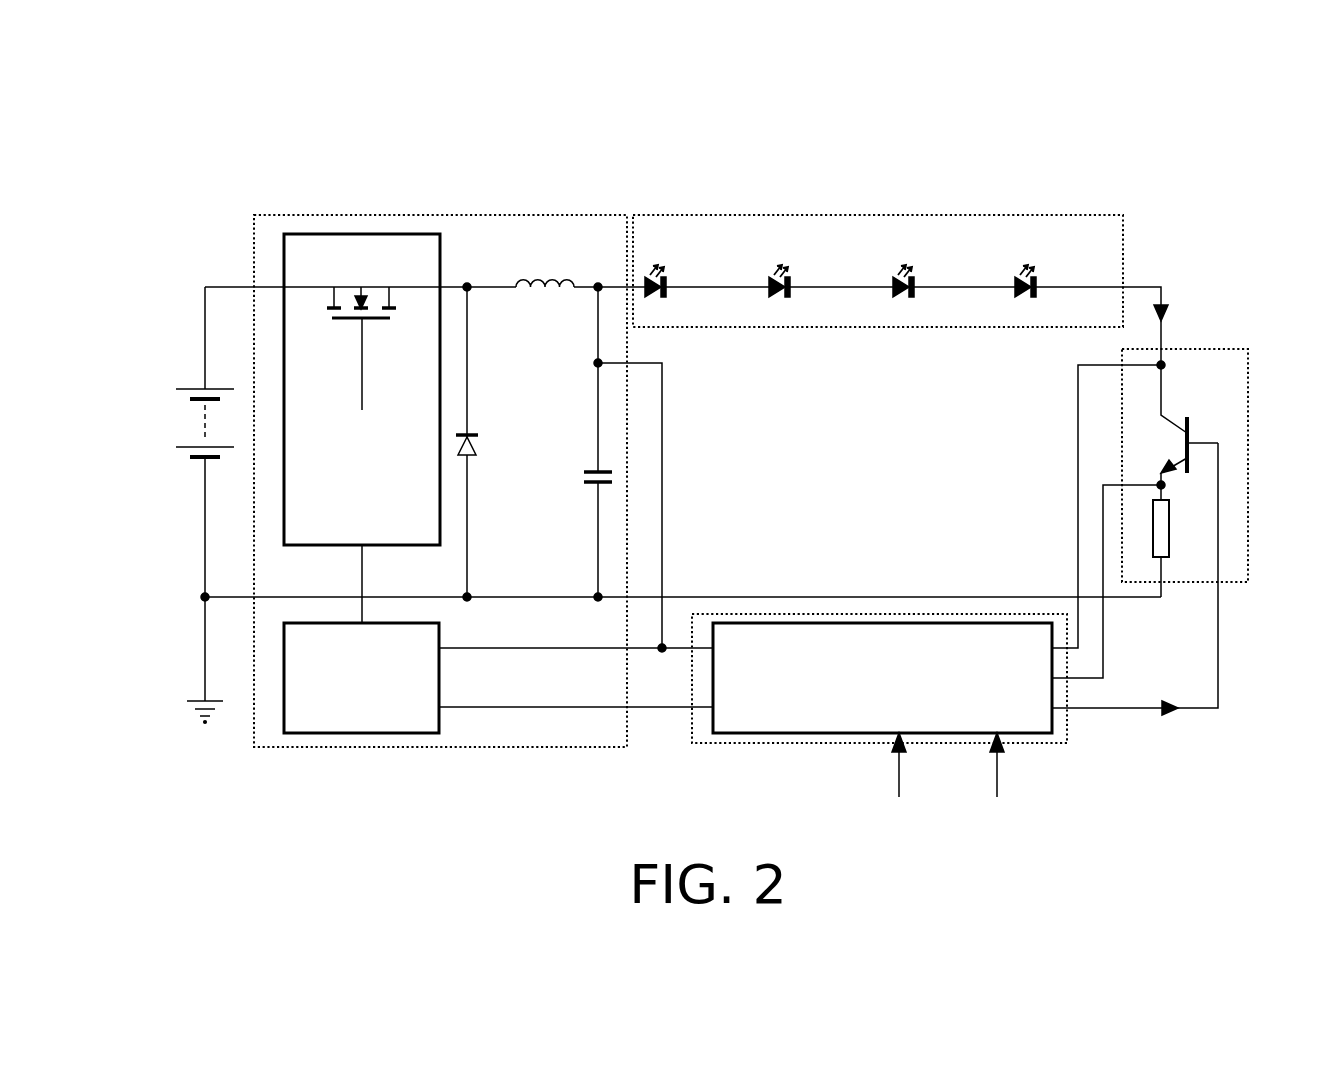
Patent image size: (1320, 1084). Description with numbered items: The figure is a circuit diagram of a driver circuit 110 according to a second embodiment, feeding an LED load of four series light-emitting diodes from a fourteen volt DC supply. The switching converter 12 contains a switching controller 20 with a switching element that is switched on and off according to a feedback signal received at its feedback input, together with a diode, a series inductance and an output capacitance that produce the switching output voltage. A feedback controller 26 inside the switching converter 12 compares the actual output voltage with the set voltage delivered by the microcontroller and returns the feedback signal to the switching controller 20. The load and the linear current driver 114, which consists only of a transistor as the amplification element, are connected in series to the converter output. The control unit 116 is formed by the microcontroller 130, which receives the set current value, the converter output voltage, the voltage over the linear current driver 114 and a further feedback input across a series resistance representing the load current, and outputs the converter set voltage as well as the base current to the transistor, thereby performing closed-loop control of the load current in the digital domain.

The circuit 110 is at (1206, 142).
The switching converter 12 is at (465, 215).
The switching controller 20 is at (348, 446).
The feedback controller 26 is at (348, 694).
The linear current driver 114 is at (1234, 349).
The control unit 116 is at (800, 745).
The microcontroller 130 is at (862, 694).